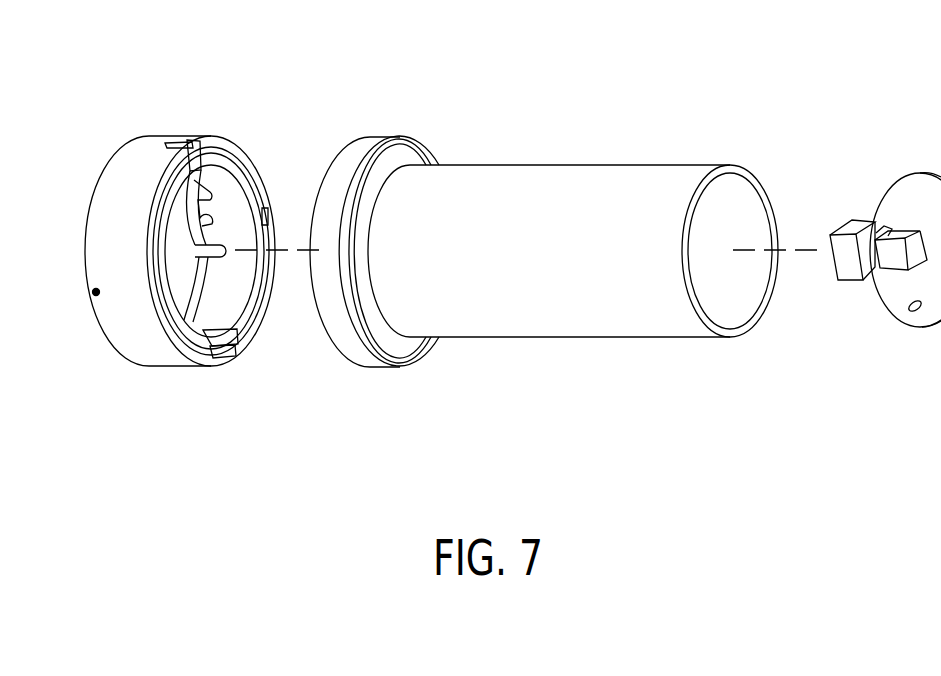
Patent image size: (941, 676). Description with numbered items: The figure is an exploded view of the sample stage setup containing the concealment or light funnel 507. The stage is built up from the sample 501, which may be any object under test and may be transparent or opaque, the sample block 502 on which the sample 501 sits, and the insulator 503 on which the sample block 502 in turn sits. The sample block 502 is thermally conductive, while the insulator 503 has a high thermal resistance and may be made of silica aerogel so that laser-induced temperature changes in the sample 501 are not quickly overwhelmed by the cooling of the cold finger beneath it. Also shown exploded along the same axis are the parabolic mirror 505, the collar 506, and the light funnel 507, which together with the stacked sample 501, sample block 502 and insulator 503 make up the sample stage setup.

The sample 501 is at (905, 240).
The sample block 502 is at (878, 268).
The insulator 503 is at (857, 227).
The parabolic mirror 505 is at (940, 188).
The collar 506 is at (152, 160).
The light funnel 507 is at (538, 188).